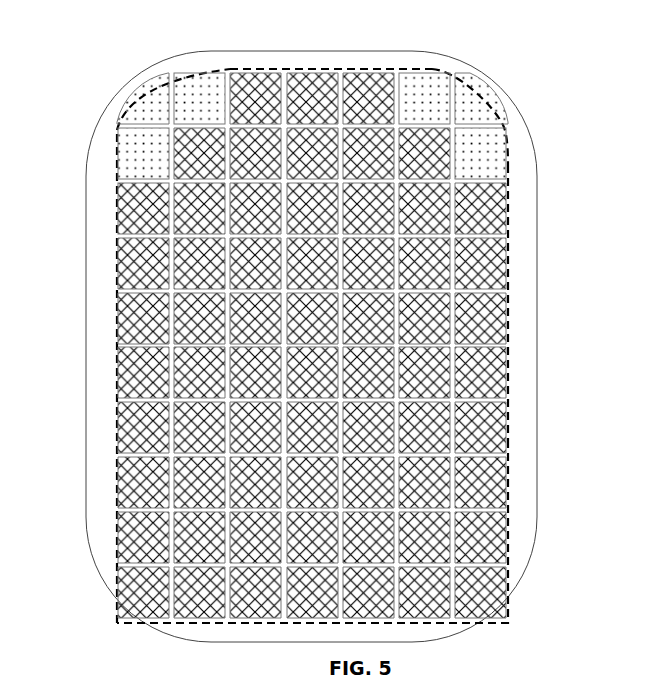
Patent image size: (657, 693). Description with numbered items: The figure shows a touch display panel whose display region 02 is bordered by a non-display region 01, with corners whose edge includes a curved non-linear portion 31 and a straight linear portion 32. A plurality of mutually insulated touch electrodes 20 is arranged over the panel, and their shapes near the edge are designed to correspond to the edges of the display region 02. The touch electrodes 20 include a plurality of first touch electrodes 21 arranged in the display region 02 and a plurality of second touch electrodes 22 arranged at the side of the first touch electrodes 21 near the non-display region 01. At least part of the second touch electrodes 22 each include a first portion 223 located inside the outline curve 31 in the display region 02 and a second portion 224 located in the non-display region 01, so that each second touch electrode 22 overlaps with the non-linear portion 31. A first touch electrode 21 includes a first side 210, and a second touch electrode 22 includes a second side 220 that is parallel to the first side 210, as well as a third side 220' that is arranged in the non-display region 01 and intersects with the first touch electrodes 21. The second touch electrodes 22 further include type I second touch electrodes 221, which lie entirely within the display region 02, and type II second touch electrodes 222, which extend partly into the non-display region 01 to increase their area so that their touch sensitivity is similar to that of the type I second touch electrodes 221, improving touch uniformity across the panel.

The non-display region 01 is at (523, 339).
The display region 02 is at (505, 453).
The touch electrodes 20 is at (518, 208).
The first touch electrodes 21 is at (428, 256).
The second touch electrodes 22 is at (480, 154).
The non-linear portion 31 is at (482, 100).
The linear portion 32 is at (509, 544).
The first side 210 is at (147, 237).
The second side 220 is at (95, 103).
The third side 220' is at (127, 86).
The type I second touch electrode 221 is at (138, 161).
The type II second touch electrode 222 is at (163, 107).
The first portion 223 is at (472, 105).
The second portion 224 is at (468, 85).